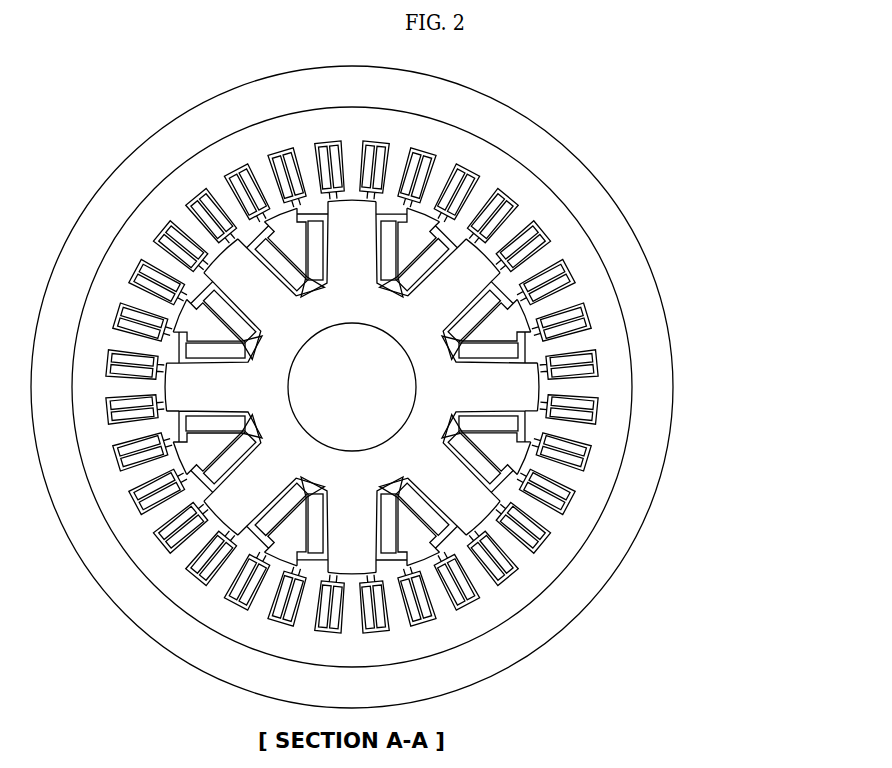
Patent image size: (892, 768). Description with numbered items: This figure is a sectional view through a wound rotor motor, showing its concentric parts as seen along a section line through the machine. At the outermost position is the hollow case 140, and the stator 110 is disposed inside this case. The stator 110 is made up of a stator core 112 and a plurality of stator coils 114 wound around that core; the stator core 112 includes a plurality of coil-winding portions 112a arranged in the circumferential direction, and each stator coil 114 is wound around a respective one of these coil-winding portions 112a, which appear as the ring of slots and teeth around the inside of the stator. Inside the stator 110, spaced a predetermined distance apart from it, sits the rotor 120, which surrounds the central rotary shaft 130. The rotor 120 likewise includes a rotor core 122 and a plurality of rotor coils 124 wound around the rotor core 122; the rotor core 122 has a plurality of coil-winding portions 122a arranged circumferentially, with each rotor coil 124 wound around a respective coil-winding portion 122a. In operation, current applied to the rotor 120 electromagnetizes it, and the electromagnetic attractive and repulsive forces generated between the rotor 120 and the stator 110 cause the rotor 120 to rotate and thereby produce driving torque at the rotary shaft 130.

The stator 110 is at (451, 386).
The stator core 112 is at (585, 221).
The coil-winding portion 112a is at (558, 298).
The stator coil 114 is at (568, 313).
The rotor 120 is at (477, 387).
The rotor core 122 is at (478, 456).
The coil-winding portion 122a is at (453, 492).
The rotor coil 124 is at (442, 553).
The rotary shaft 130 is at (368, 350).
The case 140 is at (570, 149).